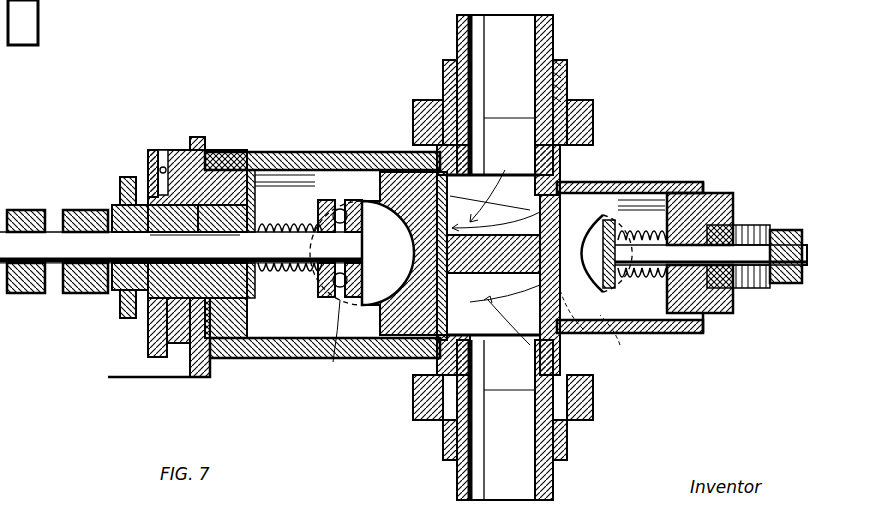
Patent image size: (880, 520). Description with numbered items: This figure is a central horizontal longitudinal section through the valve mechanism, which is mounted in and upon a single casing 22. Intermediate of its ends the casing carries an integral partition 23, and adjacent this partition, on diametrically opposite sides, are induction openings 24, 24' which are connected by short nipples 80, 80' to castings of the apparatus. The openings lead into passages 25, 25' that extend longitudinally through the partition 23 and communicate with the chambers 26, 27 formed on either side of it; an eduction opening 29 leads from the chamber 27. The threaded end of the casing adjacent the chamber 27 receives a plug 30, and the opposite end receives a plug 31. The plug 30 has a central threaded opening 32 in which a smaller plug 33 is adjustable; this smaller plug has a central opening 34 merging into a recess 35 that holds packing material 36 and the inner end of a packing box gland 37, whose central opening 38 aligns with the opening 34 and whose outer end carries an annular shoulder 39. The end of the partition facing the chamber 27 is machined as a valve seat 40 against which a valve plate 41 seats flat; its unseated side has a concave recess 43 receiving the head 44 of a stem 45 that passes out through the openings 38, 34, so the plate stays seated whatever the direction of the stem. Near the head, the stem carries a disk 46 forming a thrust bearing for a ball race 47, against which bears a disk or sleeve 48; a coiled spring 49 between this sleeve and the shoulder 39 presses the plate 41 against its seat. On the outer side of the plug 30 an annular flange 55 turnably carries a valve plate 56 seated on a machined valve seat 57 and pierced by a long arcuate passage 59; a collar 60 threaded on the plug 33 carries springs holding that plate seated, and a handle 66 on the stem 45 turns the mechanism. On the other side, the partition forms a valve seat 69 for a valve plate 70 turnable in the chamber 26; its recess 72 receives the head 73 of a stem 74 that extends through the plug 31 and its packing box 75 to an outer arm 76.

The casing 22 is at (335, 152).
The partition 23 is at (475, 273).
The induction opening 24 is at (509, 377).
The induction opening 24' is at (509, 132).
The passage 25 is at (507, 328).
The passage 25' is at (509, 162).
The chamber 26 is at (635, 222).
The chamber 27 is at (275, 360).
The eduction opening 29 is at (400, 310).
The plug 30 is at (225, 175).
The plug 31 is at (705, 192).
The internally threaded opening 32 is at (240, 310).
The smaller plug 33 is at (150, 283).
The central opening 34 is at (112, 212).
The recess 35 is at (118, 206).
The packing material 36 is at (126, 305).
The packing box gland 37 is at (205, 365).
The central opening 38 is at (192, 236).
The annular shoulder 39 is at (252, 200).
The valve seat 40 is at (490, 199).
The valve plate 41 is at (440, 172).
The concave recess 43 is at (438, 342).
The head 44 is at (362, 253).
The stem 45 is at (181, 247).
The disk 46 is at (329, 342).
The ball race 47 is at (345, 200).
The disk or sleeve 48 is at (312, 214).
The coiled spring 49 is at (325, 300).
The annular flange 55 is at (196, 137).
The valve plate 56 is at (156, 150).
The valve seat 57 is at (128, 178).
The arcuate passage 59 is at (178, 348).
The collar 60 is at (152, 340).
The handle 66 is at (27, 210).
The valve seat 69 is at (505, 289).
The valve plate 70 is at (585, 300).
The recess 72 is at (553, 287).
The head 73 is at (595, 230).
The stem 74 is at (718, 313).
The packing box 75 is at (755, 290).
The arm 76 is at (788, 230).
The nipple 80 is at (505, 420).
The nipple 80' is at (505, 95).